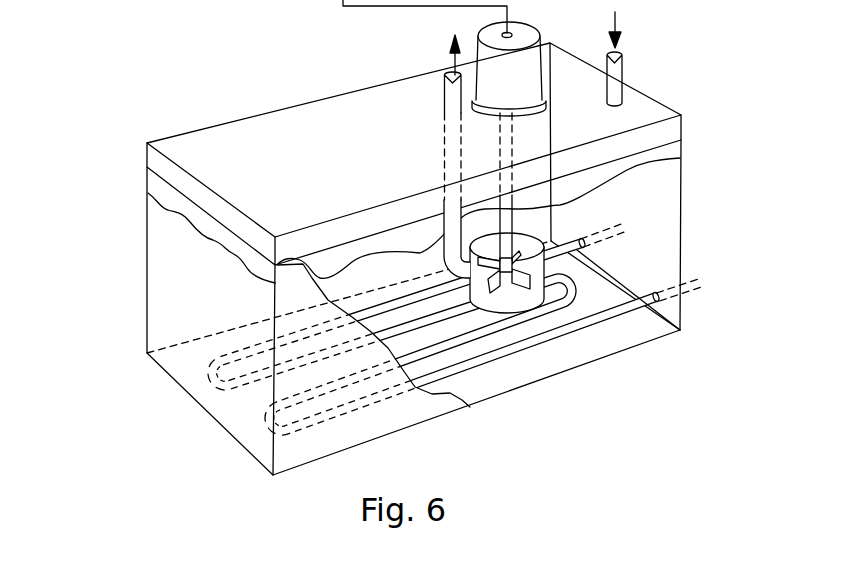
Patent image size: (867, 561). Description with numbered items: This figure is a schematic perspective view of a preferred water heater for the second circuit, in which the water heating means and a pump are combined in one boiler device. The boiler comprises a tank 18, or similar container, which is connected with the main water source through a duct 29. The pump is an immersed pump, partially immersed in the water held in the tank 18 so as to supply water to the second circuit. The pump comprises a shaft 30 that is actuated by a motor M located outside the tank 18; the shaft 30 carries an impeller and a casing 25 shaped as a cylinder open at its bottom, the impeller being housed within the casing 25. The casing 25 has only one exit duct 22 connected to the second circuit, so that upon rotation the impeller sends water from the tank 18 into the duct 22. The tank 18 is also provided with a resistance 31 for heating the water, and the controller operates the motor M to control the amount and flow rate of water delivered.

The tank 18 is at (150, 283).
The exit duct 22 is at (445, 97).
The casing 25 is at (544, 268).
The duct 29 is at (623, 73).
The shaft 30 is at (442, 262).
The resistance 31 is at (580, 327).
The motor M is at (525, 90).